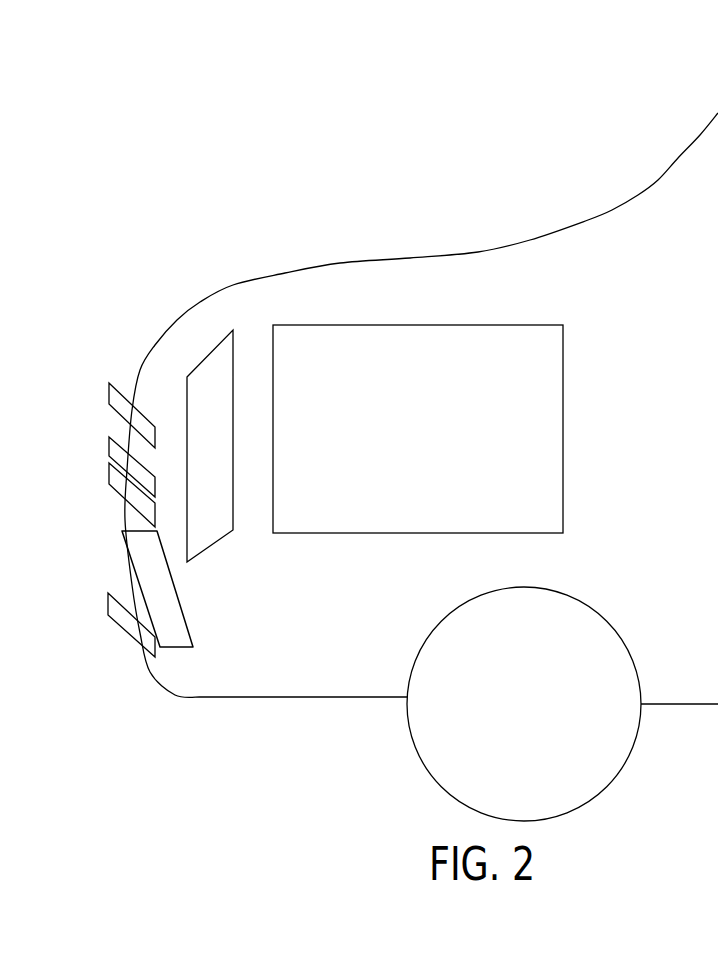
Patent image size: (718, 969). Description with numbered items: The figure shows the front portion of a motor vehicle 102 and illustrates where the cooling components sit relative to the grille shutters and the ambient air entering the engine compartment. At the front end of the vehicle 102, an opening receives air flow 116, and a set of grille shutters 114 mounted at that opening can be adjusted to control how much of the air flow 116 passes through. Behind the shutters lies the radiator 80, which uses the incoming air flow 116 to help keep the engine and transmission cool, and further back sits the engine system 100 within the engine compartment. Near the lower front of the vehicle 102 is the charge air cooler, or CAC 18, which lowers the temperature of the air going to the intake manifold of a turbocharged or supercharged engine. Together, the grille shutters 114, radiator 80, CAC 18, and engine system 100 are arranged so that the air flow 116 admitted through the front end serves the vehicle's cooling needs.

The motor vehicle 102 is at (676, 160).
The engine system 100 is at (273, 325).
The radiator 80 is at (210, 547).
The grille shutters 114 is at (110, 395).
The air flow 116 is at (254, 473).
The charge air cooler (CAC) 18 is at (183, 648).